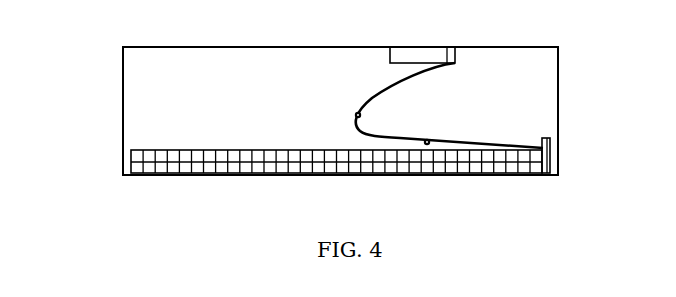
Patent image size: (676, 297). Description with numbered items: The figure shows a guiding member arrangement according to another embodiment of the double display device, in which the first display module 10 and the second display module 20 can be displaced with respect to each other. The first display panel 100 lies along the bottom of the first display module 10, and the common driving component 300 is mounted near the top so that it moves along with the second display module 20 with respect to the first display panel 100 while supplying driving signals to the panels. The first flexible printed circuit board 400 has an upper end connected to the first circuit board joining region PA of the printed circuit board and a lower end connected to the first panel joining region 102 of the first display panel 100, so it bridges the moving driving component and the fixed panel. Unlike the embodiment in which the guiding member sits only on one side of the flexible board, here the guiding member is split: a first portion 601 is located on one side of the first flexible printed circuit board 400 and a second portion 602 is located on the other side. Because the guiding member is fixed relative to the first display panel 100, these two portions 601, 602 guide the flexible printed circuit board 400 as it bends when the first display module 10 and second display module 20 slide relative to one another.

The first display module 10 is at (560, 90).
The second display module 20 is at (123, 95).
The first display panel 100 is at (405, 165).
The first panel joining region 102 is at (547, 138).
The common driving component 300 is at (391, 64).
The first circuit board joining region PA is at (452, 53).
The first flexible printed circuit board 400 is at (362, 96).
The first portion 601 is at (362, 113).
The second portion 602 is at (423, 142).